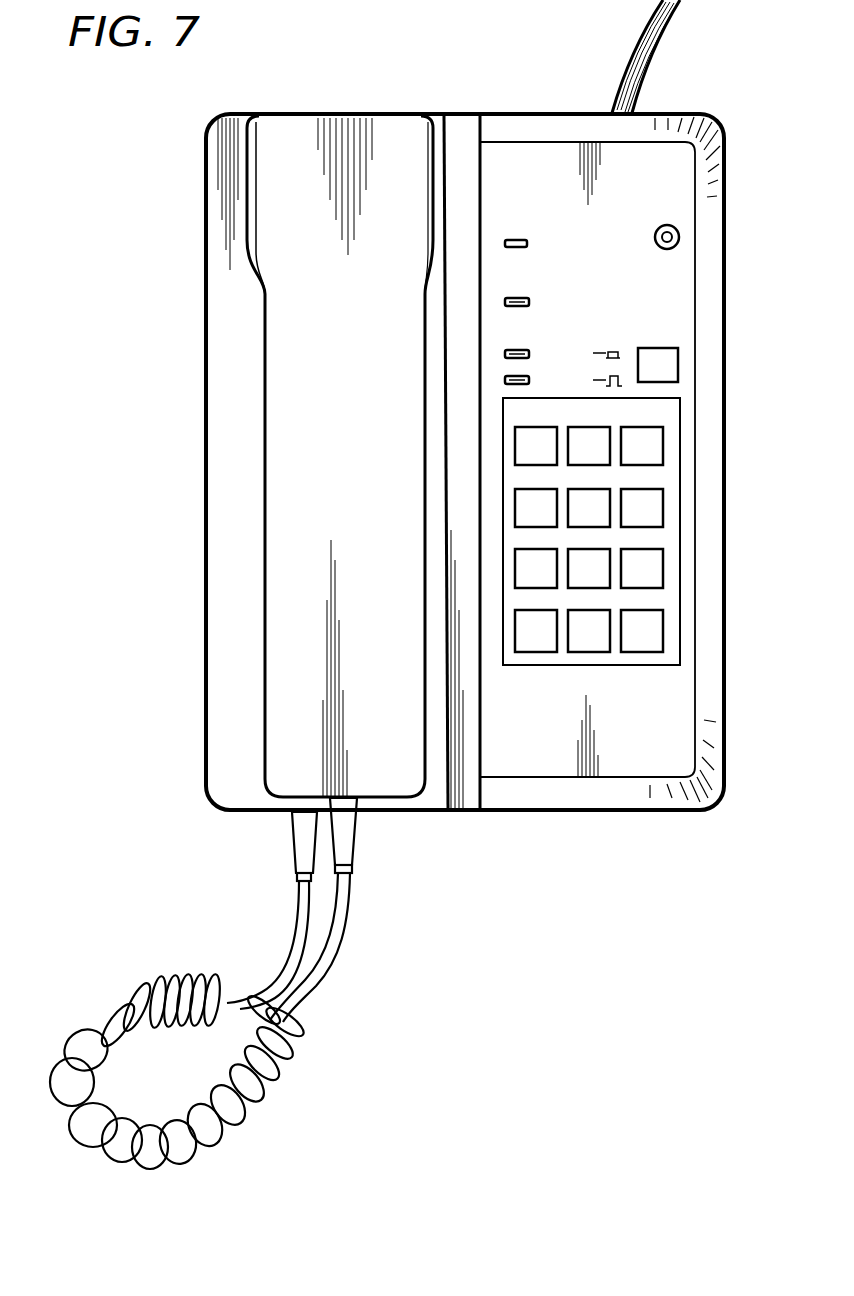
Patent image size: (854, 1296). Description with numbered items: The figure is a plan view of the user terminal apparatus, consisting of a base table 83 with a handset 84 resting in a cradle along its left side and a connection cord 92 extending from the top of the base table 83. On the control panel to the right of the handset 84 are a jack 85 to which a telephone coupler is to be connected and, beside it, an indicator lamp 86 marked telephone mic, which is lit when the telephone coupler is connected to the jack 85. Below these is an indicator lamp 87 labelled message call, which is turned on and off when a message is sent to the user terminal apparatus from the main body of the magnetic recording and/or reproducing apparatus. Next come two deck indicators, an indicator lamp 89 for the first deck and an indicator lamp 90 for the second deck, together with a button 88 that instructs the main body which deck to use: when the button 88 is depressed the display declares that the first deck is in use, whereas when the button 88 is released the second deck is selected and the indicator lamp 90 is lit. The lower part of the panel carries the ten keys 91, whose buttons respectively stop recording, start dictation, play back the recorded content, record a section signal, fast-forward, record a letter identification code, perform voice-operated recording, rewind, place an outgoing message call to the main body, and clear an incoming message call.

The base table 83 is at (208, 268).
The handset 84 is at (270, 430).
The jack 85 is at (666, 225).
The indicator lamp 86 is at (522, 238).
The indicator lamp 87 is at (505, 308).
The button 88 is at (679, 362).
The deck 1 switch 89 is at (505, 356).
The indicator lamp 90 is at (505, 384).
The ten keys 91 is at (673, 440).
The connection cord 92 is at (629, 66).